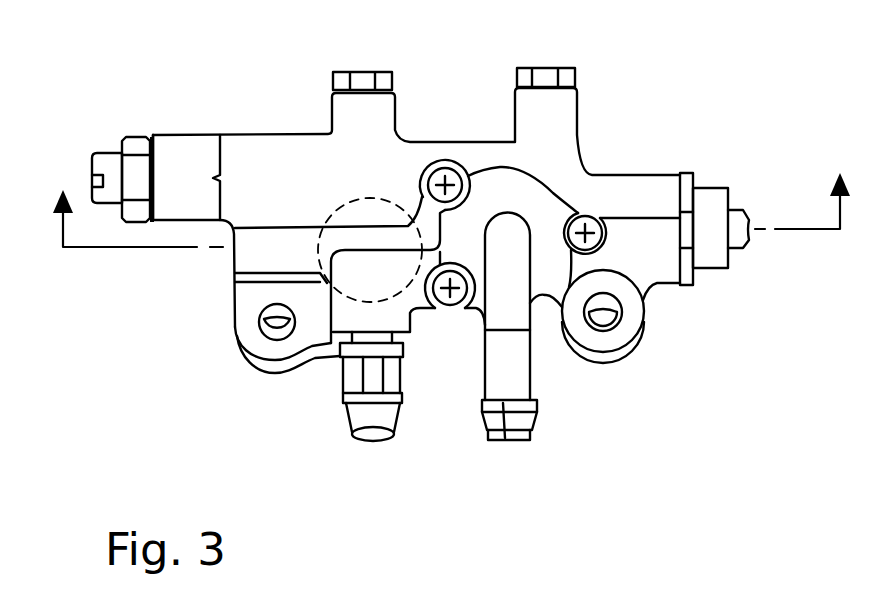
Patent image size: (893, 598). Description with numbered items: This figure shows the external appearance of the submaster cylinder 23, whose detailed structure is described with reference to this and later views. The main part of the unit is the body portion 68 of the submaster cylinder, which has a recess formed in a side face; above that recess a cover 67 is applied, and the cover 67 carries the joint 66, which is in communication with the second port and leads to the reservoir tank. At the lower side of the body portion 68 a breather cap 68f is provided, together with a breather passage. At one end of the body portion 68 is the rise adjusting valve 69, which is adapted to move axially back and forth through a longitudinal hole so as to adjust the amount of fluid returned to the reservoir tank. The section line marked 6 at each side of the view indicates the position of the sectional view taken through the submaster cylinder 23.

The submaster cylinder 23 is at (158, 101).
The body portion 68 is at (270, 152).
The rise adjusting valve 69 is at (102, 160).
The cover 67 is at (502, 187).
The breather cap 68f is at (343, 402).
The joint 66 is at (510, 440).
The section line 6- 6 is at (451, 188).